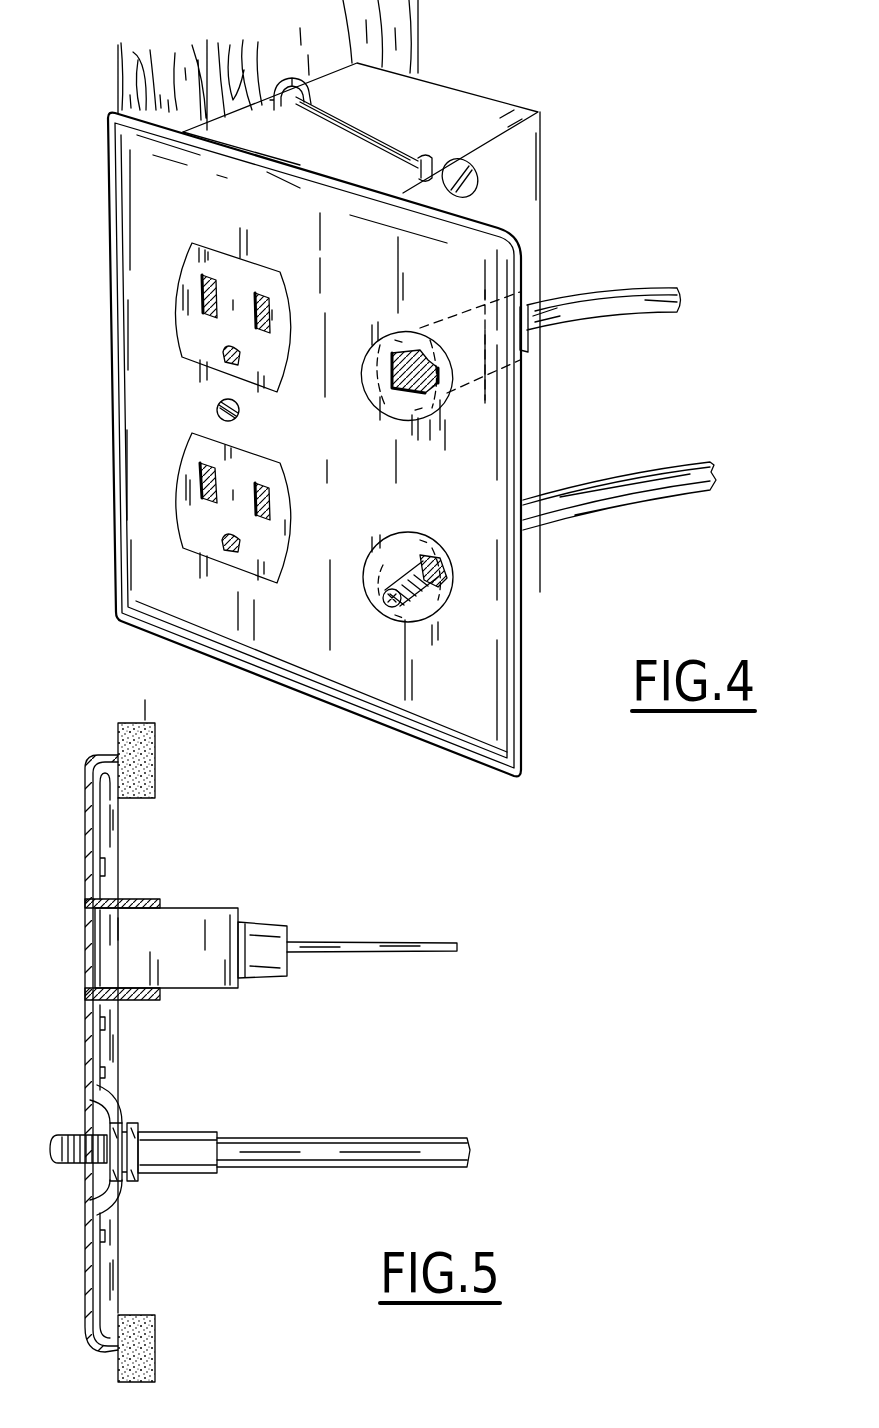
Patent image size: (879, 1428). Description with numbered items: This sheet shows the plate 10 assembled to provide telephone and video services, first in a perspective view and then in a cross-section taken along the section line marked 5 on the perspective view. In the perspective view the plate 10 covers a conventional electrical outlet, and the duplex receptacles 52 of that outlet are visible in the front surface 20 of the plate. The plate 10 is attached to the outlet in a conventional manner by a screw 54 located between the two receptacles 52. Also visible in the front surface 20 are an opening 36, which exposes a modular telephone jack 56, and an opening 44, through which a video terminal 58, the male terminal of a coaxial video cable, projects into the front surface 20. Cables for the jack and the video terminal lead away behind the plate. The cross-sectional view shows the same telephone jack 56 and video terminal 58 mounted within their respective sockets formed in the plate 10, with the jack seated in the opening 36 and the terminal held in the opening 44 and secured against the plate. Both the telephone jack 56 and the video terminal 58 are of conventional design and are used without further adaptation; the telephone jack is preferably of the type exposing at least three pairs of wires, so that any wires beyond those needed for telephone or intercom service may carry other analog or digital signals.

In FIG. 4, the section line 5- 5 is at (419, 124).
In FIG. 4, the plate 10 is at (86, 176).
In FIG. 5, the plate 10 is at (64, 838).
In FIG. 4, the front surface 20 is at (372, 480).
In FIG. 4, the opening 36 is at (385, 395).
In FIG. 5, the opening 36 is at (95, 922).
In FIG. 5, the opening 44 is at (125, 1190).
In FIG. 4, the duplex receptacles 52 is at (195, 262).
In FIG. 4, the screw 54 is at (217, 410).
In FIG. 4, the modular telephone jack 56 is at (450, 320).
In FIG. 5, the modular telephone jack 56 is at (222, 917).
In FIG. 4, the video terminal 58 is at (374, 580).
In FIG. 5, the video terminal 58 is at (185, 1132).